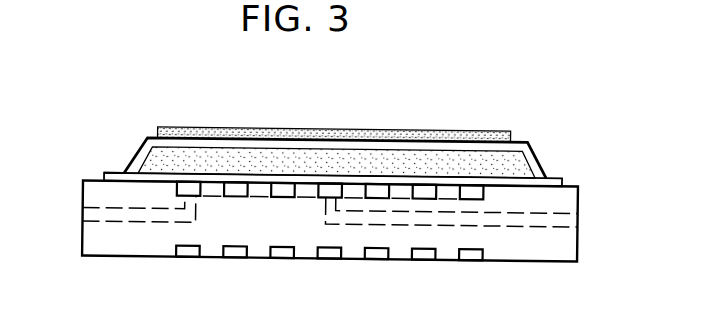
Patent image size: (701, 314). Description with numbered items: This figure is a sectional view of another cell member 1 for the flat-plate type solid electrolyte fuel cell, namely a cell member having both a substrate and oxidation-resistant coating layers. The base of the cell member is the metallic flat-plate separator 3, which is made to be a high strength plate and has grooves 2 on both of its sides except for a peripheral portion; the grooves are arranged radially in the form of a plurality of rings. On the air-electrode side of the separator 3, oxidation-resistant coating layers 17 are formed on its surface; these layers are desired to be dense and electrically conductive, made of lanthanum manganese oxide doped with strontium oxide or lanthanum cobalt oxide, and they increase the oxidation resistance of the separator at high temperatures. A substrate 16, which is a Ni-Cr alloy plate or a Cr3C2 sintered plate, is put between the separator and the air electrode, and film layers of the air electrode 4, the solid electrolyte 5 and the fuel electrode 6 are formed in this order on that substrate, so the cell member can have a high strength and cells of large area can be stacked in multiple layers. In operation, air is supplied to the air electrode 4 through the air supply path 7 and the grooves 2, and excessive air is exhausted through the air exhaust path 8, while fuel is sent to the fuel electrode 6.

The cell member 1 is at (376, 124).
The grooves 2 is at (472, 192).
The separator 3 is at (547, 198).
The air electrode 4 is at (513, 167).
The solid electrolyte 5 is at (447, 145).
The fuel electrode 6 is at (417, 131).
The air supply path 7 is at (563, 220).
The air exhaust path 8 is at (90, 217).
The substrate 16 is at (121, 172).
The oxidation-resistant coating layers 17 is at (93, 180).